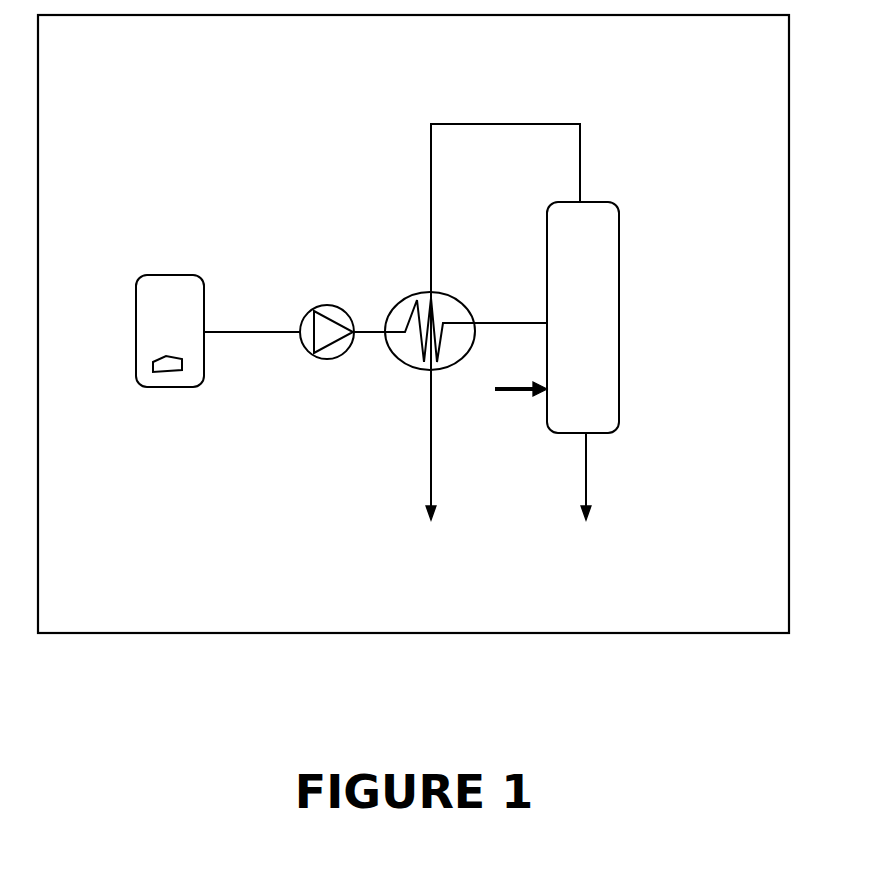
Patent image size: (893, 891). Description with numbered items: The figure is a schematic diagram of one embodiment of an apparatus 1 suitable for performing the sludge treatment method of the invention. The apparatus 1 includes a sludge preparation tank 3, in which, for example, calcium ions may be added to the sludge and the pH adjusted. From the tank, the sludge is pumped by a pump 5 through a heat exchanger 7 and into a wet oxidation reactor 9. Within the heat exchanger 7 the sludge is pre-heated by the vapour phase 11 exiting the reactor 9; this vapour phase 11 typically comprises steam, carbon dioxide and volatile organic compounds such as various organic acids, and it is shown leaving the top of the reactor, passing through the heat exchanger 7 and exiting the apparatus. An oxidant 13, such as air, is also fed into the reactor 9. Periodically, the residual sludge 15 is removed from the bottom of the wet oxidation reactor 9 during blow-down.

The apparatus 1 is at (413, 324).
The sludge preparation tank 3 is at (218, 359).
The pump 5 is at (341, 349).
The heat exchanger 7 is at (466, 311).
The wet oxidation reactor 9 is at (599, 317).
The vapour phase 11 is at (496, 349).
The oxidant 13 is at (508, 407).
The residual sludge 15 is at (596, 503).